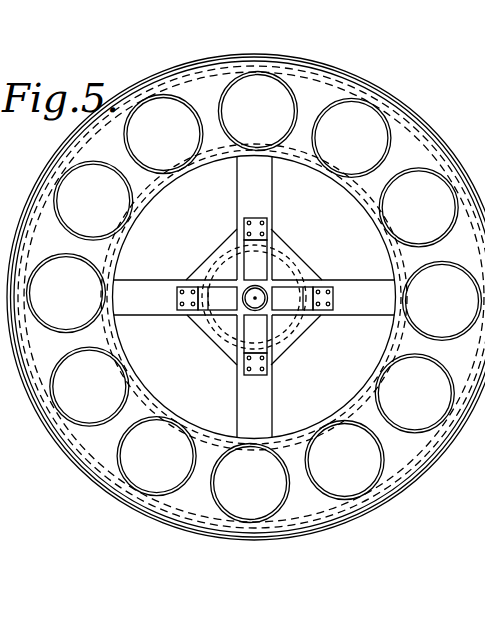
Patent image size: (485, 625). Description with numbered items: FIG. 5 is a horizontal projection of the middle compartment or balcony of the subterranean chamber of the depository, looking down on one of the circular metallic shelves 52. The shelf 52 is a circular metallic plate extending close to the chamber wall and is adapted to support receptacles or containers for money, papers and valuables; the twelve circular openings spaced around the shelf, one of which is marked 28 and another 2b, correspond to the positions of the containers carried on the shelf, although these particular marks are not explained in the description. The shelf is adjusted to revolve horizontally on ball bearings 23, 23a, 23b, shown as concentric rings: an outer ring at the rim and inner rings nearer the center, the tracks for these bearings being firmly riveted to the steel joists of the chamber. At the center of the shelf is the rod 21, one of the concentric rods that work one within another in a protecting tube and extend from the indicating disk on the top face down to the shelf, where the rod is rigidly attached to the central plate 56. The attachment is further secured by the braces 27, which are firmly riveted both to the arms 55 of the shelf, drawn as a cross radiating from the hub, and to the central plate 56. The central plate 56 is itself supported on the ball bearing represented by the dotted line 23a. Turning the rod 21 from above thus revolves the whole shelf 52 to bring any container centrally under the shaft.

The rod 21 is at (270, 282).
The ball bearings 23 is at (81, 458).
The ball bearing 23a is at (212, 316).
The ball bearing 23b is at (123, 359).
The braces 27 is at (292, 298).
The circular openings 28 is at (266, 297).
The circular opening 2b is at (66, 293).
The circular metallic shelf 52 is at (251, 297).
The arms of the shelf 55 is at (254, 297).
The central plate 56 is at (300, 334).